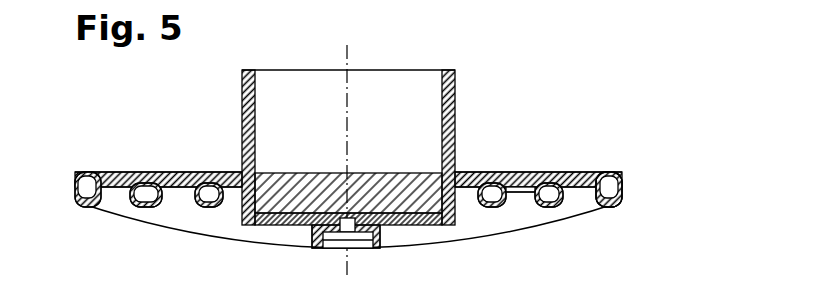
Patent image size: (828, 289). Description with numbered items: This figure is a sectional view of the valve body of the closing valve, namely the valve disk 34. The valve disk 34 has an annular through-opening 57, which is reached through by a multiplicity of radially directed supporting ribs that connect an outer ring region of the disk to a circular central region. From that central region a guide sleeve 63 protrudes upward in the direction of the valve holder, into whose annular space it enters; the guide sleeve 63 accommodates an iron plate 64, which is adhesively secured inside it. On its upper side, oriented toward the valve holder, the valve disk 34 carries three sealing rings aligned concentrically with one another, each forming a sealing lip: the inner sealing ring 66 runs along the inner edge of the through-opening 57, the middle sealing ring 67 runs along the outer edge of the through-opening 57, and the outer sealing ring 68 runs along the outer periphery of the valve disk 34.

The valve disk 34 is at (632, 183).
The annular through-opening 57 is at (532, 186).
The guide sleeve 63 is at (455, 105).
The iron plate 64 is at (409, 165).
The inner sealing ring 66 is at (496, 188).
The middle sealing ring 67 is at (568, 183).
The outer sealing ring 68 is at (621, 180).